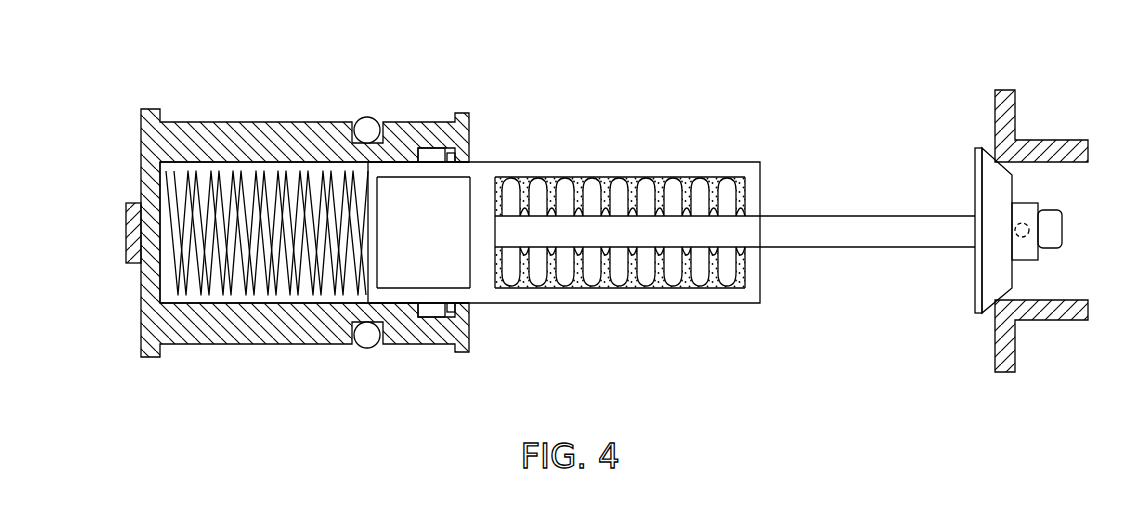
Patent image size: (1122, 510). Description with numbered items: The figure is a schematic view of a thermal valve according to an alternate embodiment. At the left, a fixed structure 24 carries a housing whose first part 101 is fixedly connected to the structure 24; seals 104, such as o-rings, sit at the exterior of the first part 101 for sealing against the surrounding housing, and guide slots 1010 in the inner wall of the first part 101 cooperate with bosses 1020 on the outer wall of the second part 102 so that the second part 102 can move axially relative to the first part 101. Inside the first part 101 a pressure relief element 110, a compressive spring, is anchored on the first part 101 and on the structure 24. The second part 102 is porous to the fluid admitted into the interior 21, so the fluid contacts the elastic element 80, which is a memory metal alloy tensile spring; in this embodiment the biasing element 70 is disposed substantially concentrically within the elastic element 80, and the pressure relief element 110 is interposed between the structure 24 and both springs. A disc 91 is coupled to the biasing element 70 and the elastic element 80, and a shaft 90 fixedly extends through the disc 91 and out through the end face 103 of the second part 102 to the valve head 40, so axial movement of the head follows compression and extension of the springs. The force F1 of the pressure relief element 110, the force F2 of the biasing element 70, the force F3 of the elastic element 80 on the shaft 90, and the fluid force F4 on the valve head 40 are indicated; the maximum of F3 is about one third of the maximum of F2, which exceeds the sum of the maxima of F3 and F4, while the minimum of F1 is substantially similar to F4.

The interior 21 is at (217, 172).
The structure 24 is at (135, 218).
The valve head 40 is at (977, 283).
The biasing element 70 is at (695, 180).
The elastic element 80 is at (525, 287).
The shaft 90 is at (832, 225).
The disc 91 is at (484, 195).
The first part 101 is at (303, 313).
The second part 102 is at (595, 295).
The end face 103 is at (752, 168).
The seals 104 is at (363, 126).
The pressure relief element 110 is at (282, 165).
The guide slots 1010 is at (425, 155).
The bosses 1020 is at (452, 157).
The force F1 is at (158, 188).
The force F2 is at (612, 178).
The force F3 is at (655, 328).
The force F4 is at (1076, 228).